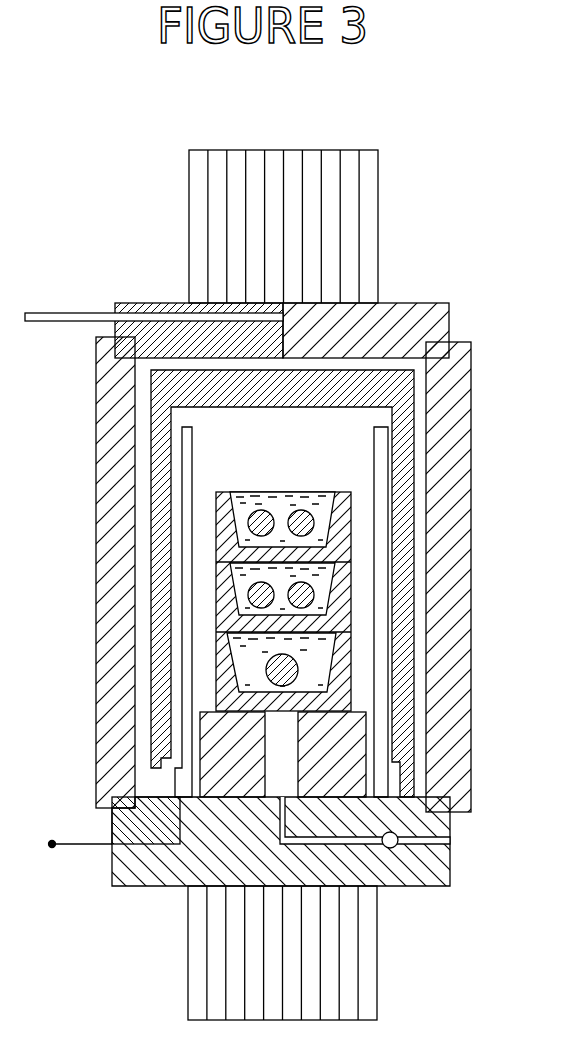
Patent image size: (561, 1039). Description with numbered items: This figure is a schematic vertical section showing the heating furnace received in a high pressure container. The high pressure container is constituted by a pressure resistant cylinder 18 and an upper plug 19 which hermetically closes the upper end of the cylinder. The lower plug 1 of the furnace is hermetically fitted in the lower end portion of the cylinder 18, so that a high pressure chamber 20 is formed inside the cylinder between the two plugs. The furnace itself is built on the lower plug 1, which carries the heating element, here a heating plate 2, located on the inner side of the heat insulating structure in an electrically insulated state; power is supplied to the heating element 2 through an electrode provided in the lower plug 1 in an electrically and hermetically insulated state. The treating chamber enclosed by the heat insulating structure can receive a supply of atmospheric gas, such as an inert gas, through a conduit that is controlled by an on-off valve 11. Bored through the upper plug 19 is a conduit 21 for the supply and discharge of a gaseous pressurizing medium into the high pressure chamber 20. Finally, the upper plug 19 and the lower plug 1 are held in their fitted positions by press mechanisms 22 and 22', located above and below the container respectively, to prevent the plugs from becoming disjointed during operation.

The lower plug 1 is at (428, 873).
The heating plate 2 is at (190, 590).
The on-off valve 11 is at (403, 835).
The pressure resistant cylinder 18 is at (452, 456).
The upper plug 19 is at (377, 320).
The high pressure chamber 20 is at (143, 457).
The conduit 21 is at (181, 312).
The press mechanism 22 is at (283, 202).
The press mechanism 22' is at (314, 953).